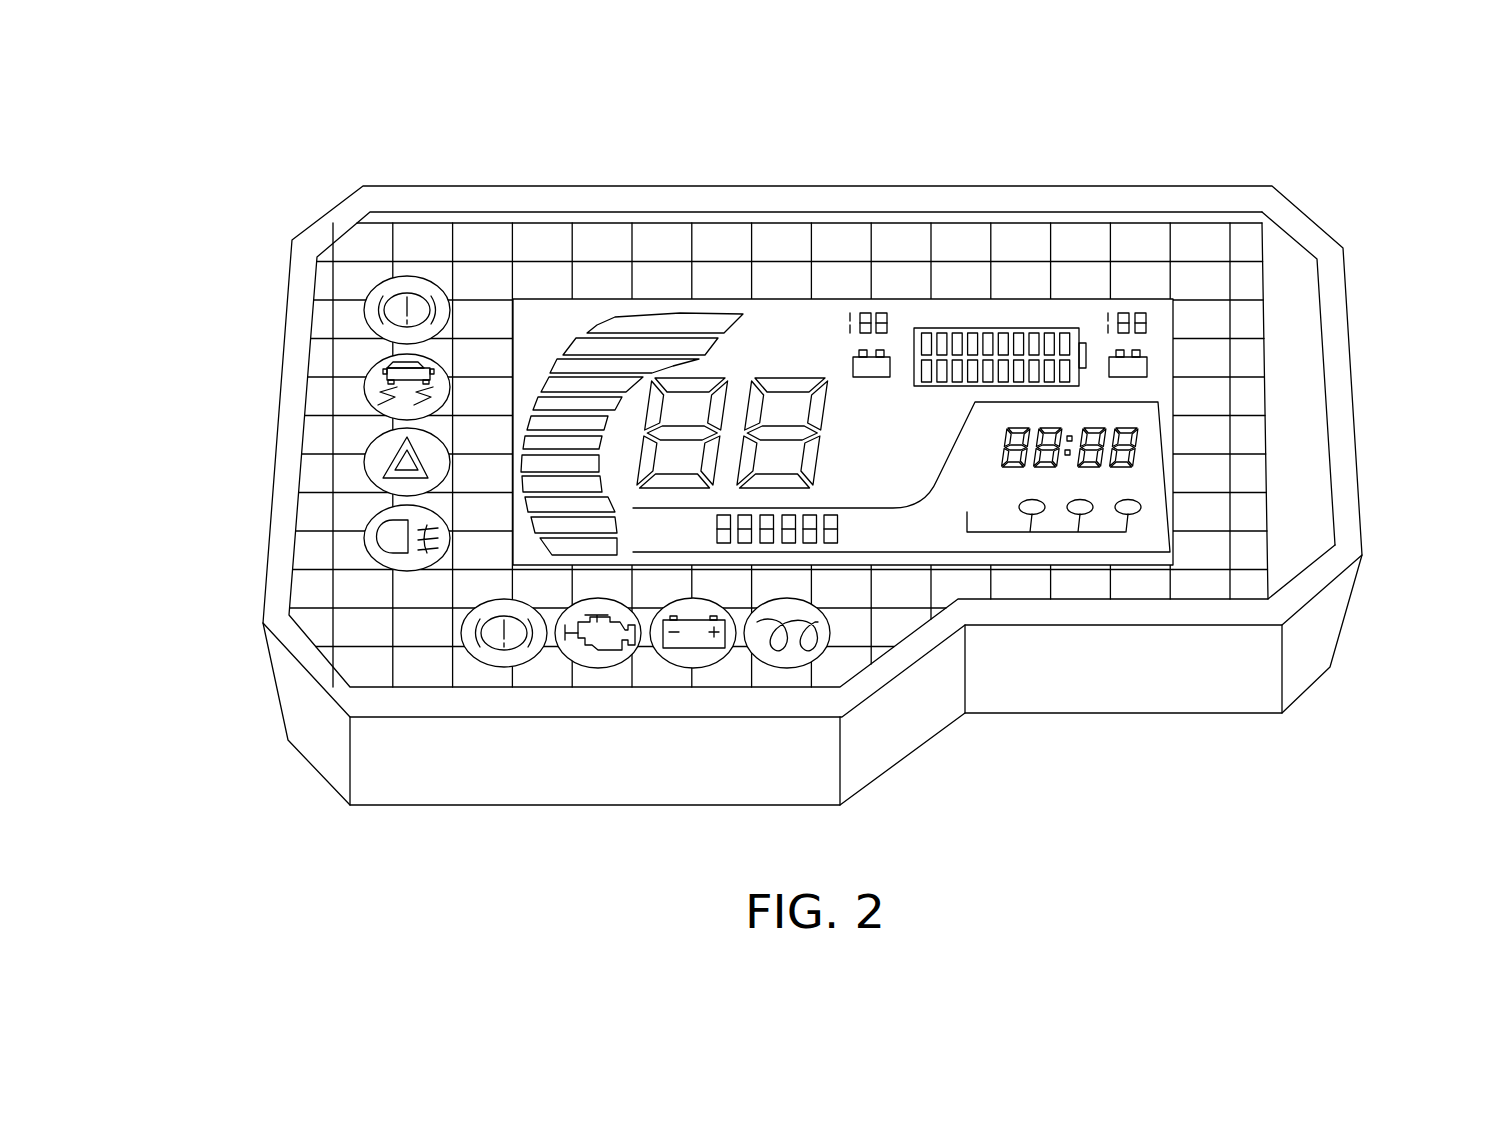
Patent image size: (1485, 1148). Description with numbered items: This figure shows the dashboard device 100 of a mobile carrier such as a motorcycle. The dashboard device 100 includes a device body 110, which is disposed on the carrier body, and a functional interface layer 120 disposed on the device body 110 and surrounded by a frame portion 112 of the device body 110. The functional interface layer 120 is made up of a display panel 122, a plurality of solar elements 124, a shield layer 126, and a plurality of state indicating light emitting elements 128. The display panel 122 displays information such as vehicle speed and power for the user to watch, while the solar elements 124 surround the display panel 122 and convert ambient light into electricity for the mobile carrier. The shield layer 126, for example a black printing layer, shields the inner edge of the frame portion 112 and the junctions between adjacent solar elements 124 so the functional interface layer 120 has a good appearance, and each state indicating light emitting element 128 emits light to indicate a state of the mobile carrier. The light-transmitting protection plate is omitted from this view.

The dashboard device 100 is at (1440, 862).
The device body 110 is at (1328, 617).
The frame portion 112 is at (1343, 436).
The functional interface layer 120 is at (776, 455).
The display panel 122 is at (778, 296).
The solar element 124 is at (1209, 475).
The shield layer 126 is at (1302, 282).
The state indicating light emitting element 128 is at (370, 463).